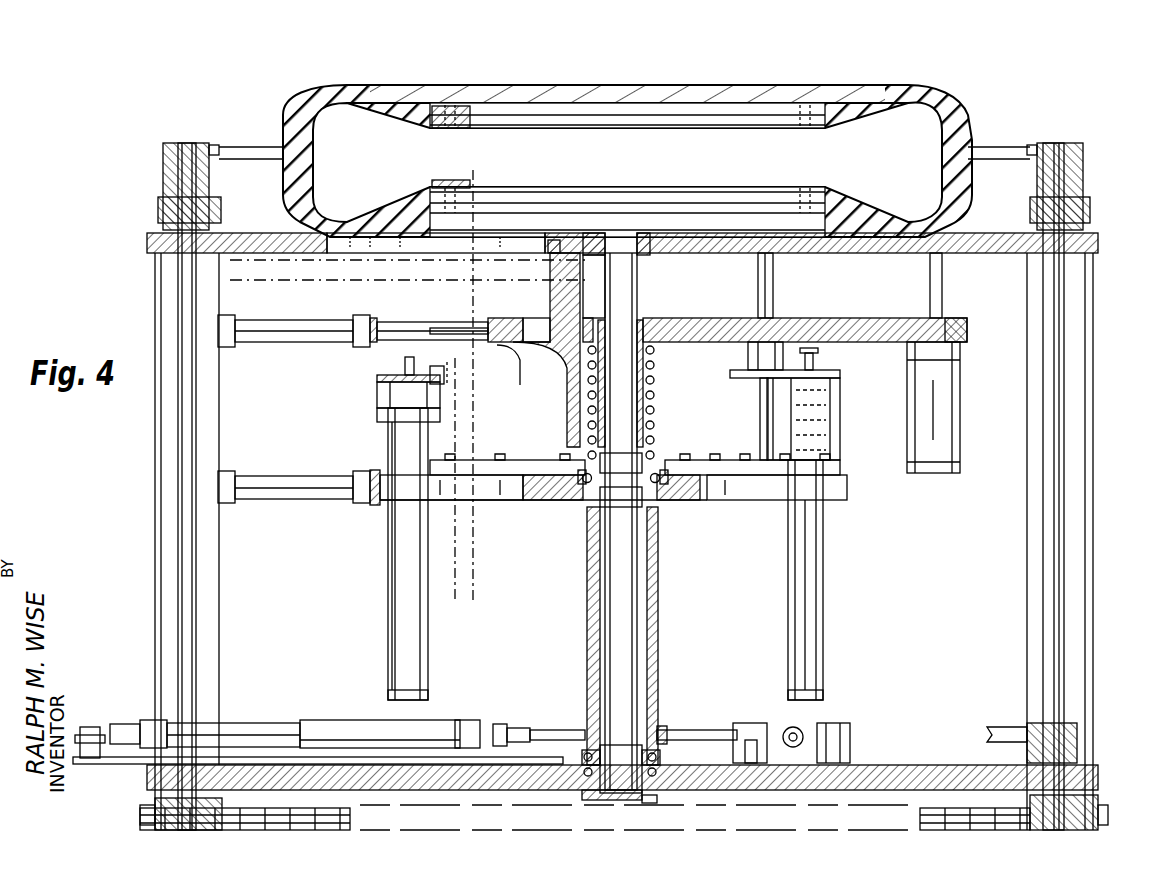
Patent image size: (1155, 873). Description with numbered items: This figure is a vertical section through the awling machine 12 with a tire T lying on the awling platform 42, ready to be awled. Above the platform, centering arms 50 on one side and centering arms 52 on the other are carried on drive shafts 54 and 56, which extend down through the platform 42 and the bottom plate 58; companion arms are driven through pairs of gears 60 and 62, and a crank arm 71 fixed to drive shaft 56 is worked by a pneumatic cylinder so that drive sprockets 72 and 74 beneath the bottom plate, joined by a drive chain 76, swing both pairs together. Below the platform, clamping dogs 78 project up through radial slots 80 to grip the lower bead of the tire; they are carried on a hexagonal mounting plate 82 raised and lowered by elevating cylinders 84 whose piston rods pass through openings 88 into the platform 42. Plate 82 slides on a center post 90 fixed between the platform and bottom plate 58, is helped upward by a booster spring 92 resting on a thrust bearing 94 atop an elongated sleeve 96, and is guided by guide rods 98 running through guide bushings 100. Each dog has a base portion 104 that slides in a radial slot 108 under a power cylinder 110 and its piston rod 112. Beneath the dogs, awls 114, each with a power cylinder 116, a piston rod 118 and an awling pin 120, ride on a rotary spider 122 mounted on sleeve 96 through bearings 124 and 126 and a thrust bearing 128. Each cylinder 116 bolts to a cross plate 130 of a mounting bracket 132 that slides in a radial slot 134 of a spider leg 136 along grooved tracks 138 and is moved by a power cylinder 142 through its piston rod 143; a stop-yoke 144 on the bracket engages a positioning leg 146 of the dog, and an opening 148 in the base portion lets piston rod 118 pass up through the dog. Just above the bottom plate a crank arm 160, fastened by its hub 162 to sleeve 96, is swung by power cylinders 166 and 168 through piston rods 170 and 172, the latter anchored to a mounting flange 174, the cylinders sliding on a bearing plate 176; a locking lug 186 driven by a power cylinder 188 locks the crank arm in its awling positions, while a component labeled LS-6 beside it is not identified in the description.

The tire testing machine 12 is at (250, 98).
The tire T is at (490, 95).
The awling platform 42 is at (982, 232).
The centering arms 50 is at (235, 150).
The centering arms 52 is at (1012, 150).
The drive shaft 54 is at (197, 432).
The drive shaft 56 is at (1050, 480).
The bottom plate 58 is at (445, 790).
The pair of gears 60 is at (160, 205).
The pair of gears 62 is at (1092, 205).
The crank arm 71 is at (1000, 728).
The drive sprocket 72 is at (160, 810).
The drive sprocket 74 is at (1105, 810).
The drive chain 76 is at (310, 815).
The clamping dogs 78 is at (455, 180).
The radial slots 80 is at (330, 238).
The mounting plate 82 is at (682, 345).
The elevating cylinders 84 is at (950, 425).
The openings 88 is at (965, 325).
The center post 90 is at (638, 274).
The booster spring 92 is at (660, 422).
The thrust bearing 94 is at (580, 472).
The sleeve 96 is at (660, 606).
The guide rods 98 is at (775, 274).
The guide bushings 100 is at (745, 372).
The base portion 104 is at (514, 344).
The radial slot 108 is at (410, 320).
The power cylinders 110 is at (300, 285).
The piston rods 112 is at (440, 322).
The awls 114 is at (390, 414).
The power cylinder 116 is at (395, 582).
The piston rod 118 is at (400, 375).
The awling pin 120 is at (406, 362).
The rotary spider 122 is at (550, 503).
The bearing 124 is at (642, 508).
The bearing 126 is at (660, 752).
The thrust bearing 128 is at (576, 792).
The cross plate 130 is at (378, 388).
The mounting bracket 132 is at (378, 414).
The radial slot 134 is at (485, 500).
The legs 136 is at (465, 520).
The grooved tracks 138 is at (515, 460).
The power cylinders 142 is at (262, 492).
The piston rod 143 is at (372, 504).
The stop-yoke 144 is at (445, 384).
The positioning leg 146 is at (500, 385).
The opening 148 is at (537, 320).
The crank arm 160 is at (556, 728).
The hub 162 is at (665, 728).
The power cylinder 166 is at (380, 724).
The power cylinder 168 is at (247, 725).
The piston rod 170 is at (490, 725).
The piston rod 172 is at (135, 725).
The mounting flange 174 is at (90, 765).
The bearing plate 176 is at (380, 758).
The locking lug 186 is at (788, 730).
The power cylinder 188 is at (830, 730).
The limit switch LS-6 is at (775, 725).